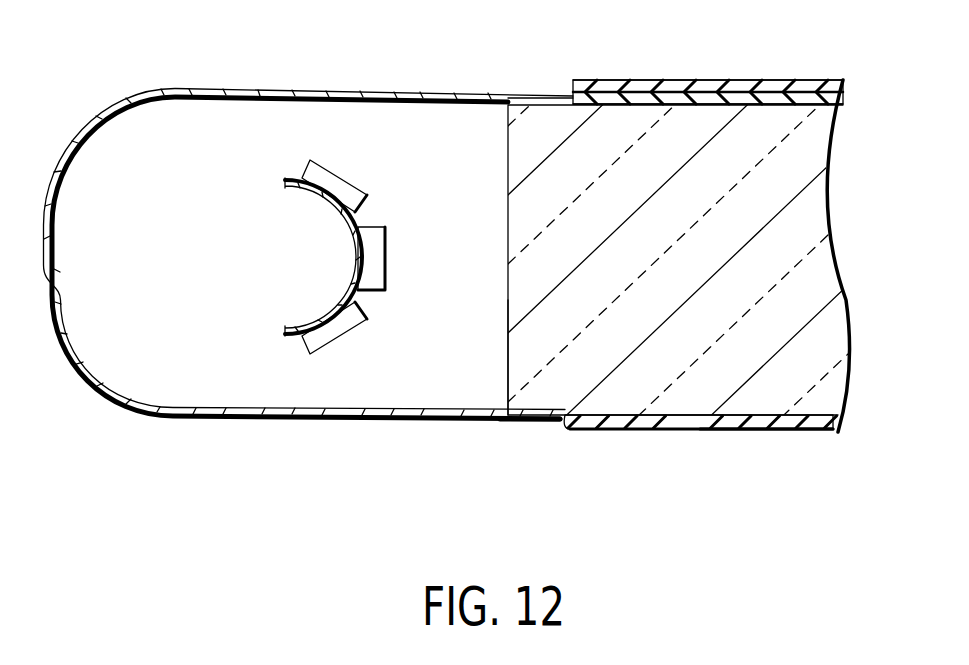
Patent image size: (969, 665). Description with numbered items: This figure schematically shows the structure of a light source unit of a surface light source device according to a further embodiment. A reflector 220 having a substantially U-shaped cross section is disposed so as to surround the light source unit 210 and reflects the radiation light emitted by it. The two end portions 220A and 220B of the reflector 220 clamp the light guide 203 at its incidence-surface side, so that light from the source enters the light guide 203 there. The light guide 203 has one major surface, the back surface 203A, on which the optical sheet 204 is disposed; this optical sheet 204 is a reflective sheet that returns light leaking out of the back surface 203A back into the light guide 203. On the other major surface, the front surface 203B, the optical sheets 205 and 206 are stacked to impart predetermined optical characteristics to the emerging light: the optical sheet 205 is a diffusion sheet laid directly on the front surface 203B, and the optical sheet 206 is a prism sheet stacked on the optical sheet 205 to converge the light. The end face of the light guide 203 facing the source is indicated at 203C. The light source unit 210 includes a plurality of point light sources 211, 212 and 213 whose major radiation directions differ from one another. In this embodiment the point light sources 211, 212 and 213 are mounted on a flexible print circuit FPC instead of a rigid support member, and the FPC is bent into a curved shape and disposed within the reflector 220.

The reflector 220 is at (218, 88).
The end portion of the reflector 220A is at (540, 428).
The end portion of the reflector 220B is at (530, 98).
The light guide 203 is at (803, 210).
The major surface (back surface) of the light guide 203A is at (686, 437).
The major surface (front surface) of the light guide 203B is at (735, 88).
The battery end face 203C is at (500, 368).
The optical sheet 204 is at (780, 431).
The optical sheet 205 is at (841, 106).
The optical sheet 206 is at (843, 82).
The light source unit 210 is at (290, 388).
The point light source 211 is at (338, 187).
The point light source 212 is at (370, 248).
The point light source 213 is at (333, 332).
The flexible print circuit FPC is at (283, 330).